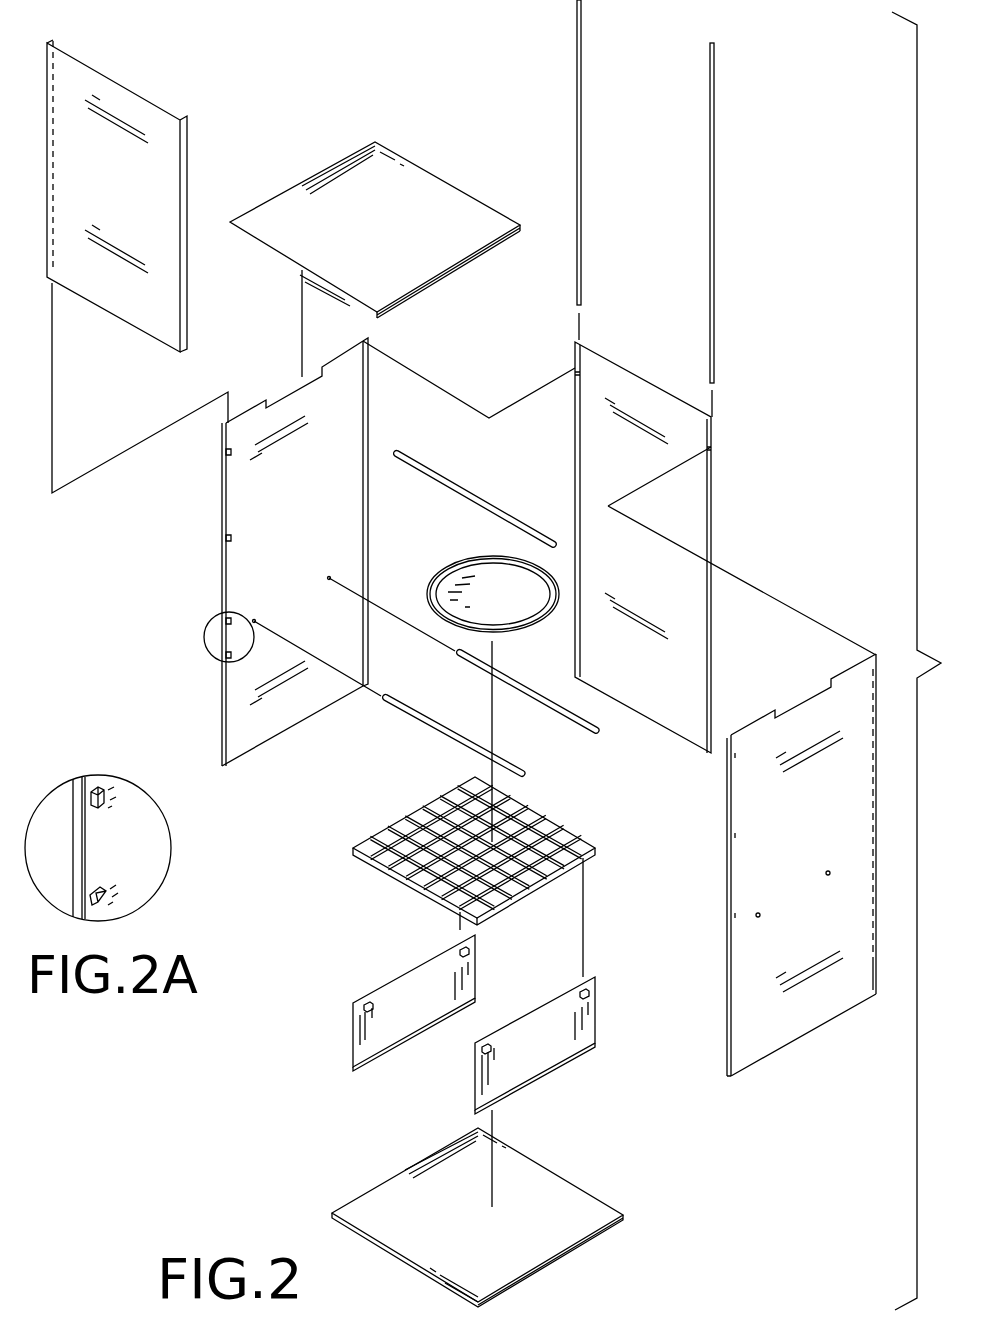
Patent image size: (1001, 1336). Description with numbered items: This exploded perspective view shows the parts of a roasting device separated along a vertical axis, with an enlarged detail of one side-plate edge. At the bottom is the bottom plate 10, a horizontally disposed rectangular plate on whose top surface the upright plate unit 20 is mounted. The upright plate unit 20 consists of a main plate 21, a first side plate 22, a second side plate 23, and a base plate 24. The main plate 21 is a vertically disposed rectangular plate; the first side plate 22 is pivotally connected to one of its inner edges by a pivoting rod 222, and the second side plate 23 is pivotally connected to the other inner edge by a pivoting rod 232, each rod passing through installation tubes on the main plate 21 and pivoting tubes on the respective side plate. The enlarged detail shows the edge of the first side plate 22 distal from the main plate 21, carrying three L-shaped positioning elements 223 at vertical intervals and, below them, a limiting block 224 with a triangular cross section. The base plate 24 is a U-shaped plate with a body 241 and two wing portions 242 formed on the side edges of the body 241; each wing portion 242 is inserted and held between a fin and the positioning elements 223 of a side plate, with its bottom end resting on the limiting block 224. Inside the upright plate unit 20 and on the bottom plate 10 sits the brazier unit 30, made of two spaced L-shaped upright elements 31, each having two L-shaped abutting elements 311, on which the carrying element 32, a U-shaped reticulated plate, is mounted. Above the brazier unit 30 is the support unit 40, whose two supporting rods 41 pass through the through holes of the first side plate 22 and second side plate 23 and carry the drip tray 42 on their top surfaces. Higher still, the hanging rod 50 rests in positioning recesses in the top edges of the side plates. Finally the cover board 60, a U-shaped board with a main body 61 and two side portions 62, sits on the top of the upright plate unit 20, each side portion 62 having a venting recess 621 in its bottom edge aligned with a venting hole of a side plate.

In FIG. 2, the bottom plate 10 is at (568, 1263).
In FIG. 2, the upright plate unit 20 is at (785, 453).
In FIG. 2, the main plate 21 is at (631, 359).
In FIG. 2, the first side plate 22 is at (384, 527).
In FIG. 2, the pivoting rod 222 is at (582, 120).
In FIG. 2A, the positioning element 223 is at (113, 798).
In FIG. 2A, the limiting block 224 is at (110, 893).
In FIG. 2, the second side plate 23 is at (818, 682).
In FIG. 2, the pivoting rod 232 is at (715, 203).
In FIG. 2, the base plate 24 is at (158, 201).
In FIG. 2, the body 241 is at (151, 315).
In FIG. 2, the wing portion 242 is at (76, 67).
In FIG. 2, the brazier unit 30 is at (452, 1021).
In FIG. 2, the upright element 31 is at (345, 1052).
In FIG. 2, the abutting element 311 is at (460, 955).
In FIG. 2, the carrying element 32 is at (407, 893).
In FIG. 2, the support unit 40 is at (427, 666).
In FIG. 2, the supporting rod 41 is at (462, 740).
In FIG. 2, the drip tray 42 is at (494, 612).
In FIG. 2, the hanging rod 50 is at (447, 480).
In FIG. 2, the cover board 60 is at (394, 234).
In FIG. 2, the main body 61 is at (420, 185).
In FIG. 2, the side portion 62 is at (468, 276).
In FIG. 2, the venting recess 621 is at (420, 285).